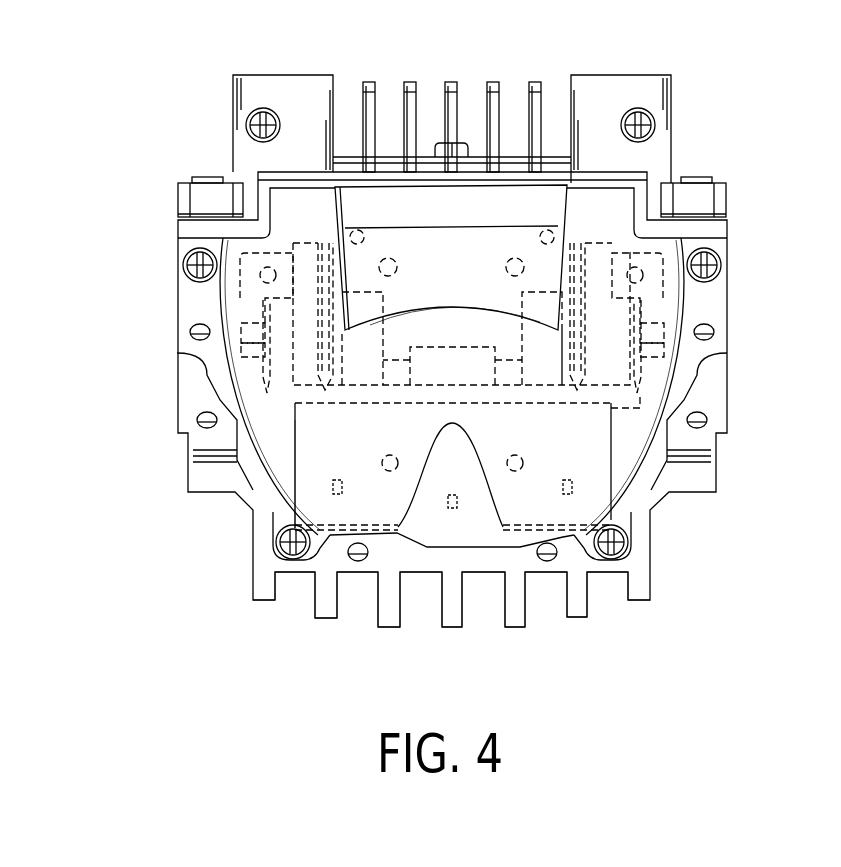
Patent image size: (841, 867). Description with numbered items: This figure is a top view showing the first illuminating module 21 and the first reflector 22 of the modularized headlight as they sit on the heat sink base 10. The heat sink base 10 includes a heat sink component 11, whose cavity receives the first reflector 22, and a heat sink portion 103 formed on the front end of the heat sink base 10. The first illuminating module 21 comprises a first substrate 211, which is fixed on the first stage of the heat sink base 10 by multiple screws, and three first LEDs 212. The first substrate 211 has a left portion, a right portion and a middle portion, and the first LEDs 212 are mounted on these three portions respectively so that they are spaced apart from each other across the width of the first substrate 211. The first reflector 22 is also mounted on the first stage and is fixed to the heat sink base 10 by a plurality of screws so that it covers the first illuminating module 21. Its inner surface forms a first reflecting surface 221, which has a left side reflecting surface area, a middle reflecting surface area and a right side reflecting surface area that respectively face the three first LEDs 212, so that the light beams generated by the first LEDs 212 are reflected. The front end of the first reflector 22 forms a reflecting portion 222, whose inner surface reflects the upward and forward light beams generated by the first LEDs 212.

The heat sink base 10 is at (193, 373).
The heat sink portion 103 is at (537, 97).
The heat sink component 11 is at (580, 595).
The first illuminating module 21 is at (282, 453).
The first substrate 211 is at (310, 477).
The first LEDs 212 is at (335, 497).
The first reflector 22 is at (643, 478).
The first reflecting surface 221 is at (637, 425).
The reflecting portion 222 is at (533, 205).